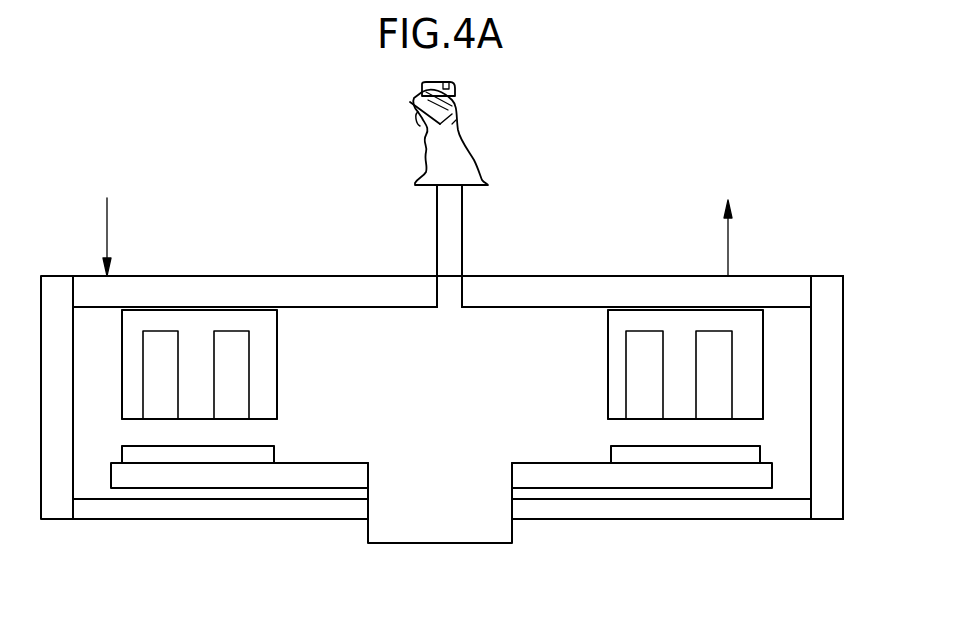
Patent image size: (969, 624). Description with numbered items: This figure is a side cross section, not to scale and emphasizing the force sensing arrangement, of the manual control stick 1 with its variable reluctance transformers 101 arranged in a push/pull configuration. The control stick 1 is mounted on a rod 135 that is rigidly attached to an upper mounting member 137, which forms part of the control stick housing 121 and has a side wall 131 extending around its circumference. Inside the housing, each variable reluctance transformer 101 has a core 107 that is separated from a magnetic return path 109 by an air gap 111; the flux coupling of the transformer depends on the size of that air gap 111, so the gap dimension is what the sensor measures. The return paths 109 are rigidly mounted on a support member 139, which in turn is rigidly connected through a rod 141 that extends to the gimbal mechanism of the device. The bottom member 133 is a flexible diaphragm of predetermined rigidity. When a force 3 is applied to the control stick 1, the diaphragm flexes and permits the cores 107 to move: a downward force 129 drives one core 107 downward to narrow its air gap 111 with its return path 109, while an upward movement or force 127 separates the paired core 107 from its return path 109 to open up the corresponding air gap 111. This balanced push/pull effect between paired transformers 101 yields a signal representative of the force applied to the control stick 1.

The control stick 1 is at (455, 112).
The force 3 is at (468, 137).
The variable reluctance transformer 101 is at (282, 371).
The core 107 is at (277, 339).
The magnetic return path 109 is at (275, 453).
The air gap 111 is at (257, 435).
The control stick housing 121 is at (832, 272).
The upward movement or force 127 is at (730, 222).
The downward force 129 is at (106, 222).
The side wall 131 is at (843, 403).
The bottom member 133 is at (687, 520).
The rod 135 is at (462, 232).
The upper mounting member 137 is at (532, 278).
The support member 139 is at (757, 478).
The rod 141 is at (512, 541).